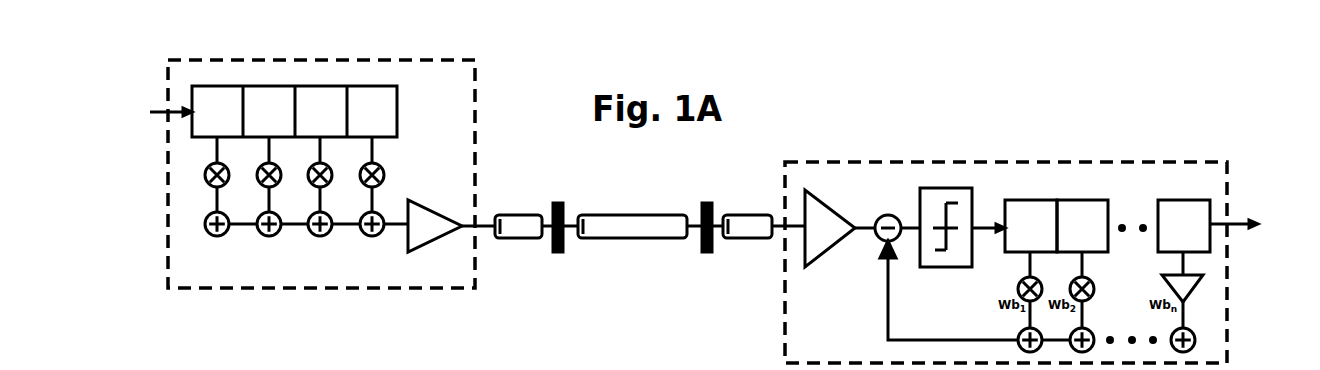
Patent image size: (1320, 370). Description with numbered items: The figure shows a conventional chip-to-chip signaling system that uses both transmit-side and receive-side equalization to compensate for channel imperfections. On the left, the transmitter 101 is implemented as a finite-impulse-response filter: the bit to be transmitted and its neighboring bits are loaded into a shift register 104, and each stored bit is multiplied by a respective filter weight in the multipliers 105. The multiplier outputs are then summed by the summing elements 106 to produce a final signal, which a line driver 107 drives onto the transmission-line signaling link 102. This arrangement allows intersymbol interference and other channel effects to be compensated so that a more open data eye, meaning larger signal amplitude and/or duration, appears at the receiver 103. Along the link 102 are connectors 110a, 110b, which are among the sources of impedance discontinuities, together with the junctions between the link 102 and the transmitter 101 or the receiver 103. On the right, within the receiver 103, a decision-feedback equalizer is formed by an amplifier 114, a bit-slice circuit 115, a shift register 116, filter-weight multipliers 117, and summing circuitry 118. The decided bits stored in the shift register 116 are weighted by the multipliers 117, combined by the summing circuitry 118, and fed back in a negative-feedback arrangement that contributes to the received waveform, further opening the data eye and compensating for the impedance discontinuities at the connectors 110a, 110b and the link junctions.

The transmitter 101 is at (449, 104).
The transmission-line signaling link 102 is at (618, 258).
The receiver 103 is at (849, 341).
The shift register 104 is at (243, 86).
The multipliers 105 is at (396, 175).
The summing of multiplier outputs 106 is at (193, 244).
The line driver 107 is at (432, 237).
The connector 110a is at (557, 203).
The connector 110b is at (706, 203).
The amplifier 114 is at (823, 199).
The bit-slice circuit 115 is at (930, 188).
The shift register 116 is at (1057, 200).
The filter-weight multipliers 117 is at (968, 294).
The summing circuitry 118 is at (1004, 348).